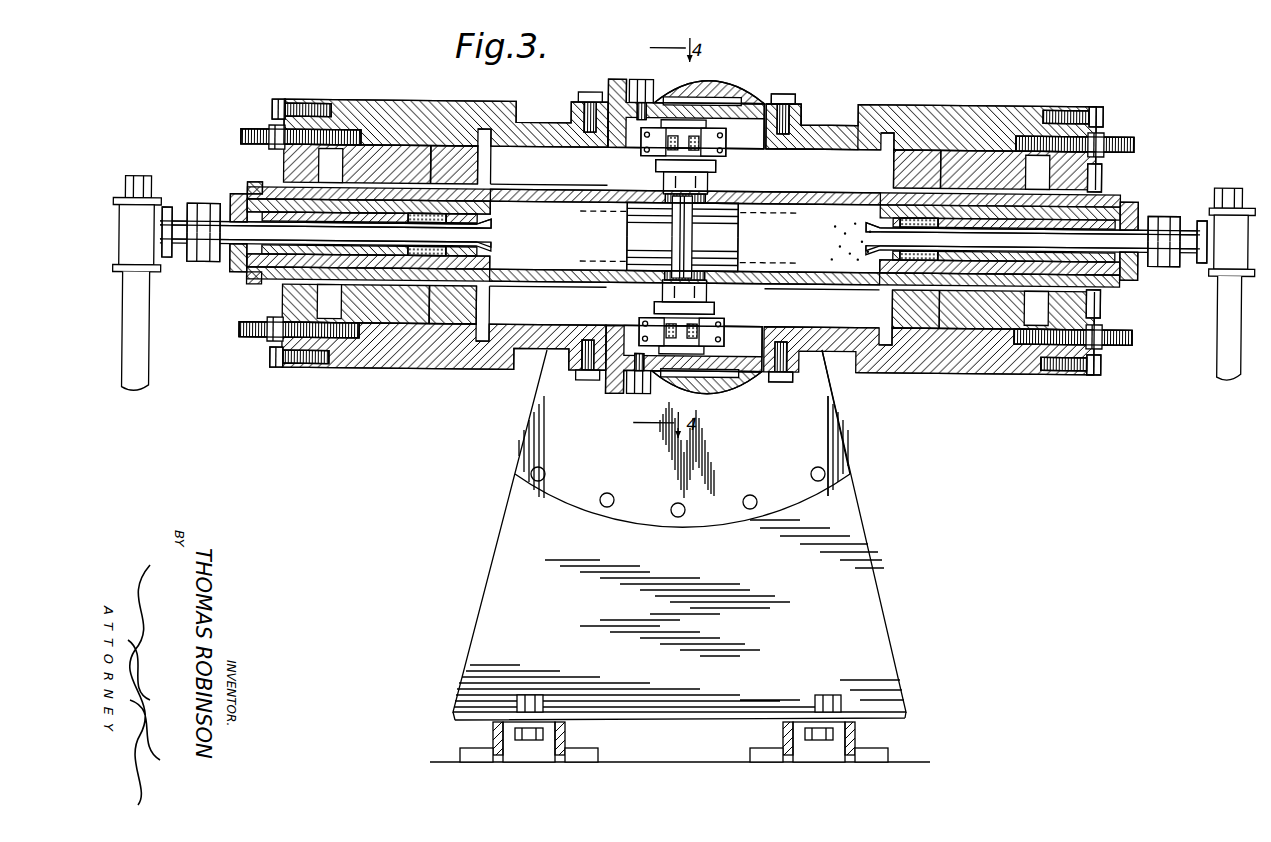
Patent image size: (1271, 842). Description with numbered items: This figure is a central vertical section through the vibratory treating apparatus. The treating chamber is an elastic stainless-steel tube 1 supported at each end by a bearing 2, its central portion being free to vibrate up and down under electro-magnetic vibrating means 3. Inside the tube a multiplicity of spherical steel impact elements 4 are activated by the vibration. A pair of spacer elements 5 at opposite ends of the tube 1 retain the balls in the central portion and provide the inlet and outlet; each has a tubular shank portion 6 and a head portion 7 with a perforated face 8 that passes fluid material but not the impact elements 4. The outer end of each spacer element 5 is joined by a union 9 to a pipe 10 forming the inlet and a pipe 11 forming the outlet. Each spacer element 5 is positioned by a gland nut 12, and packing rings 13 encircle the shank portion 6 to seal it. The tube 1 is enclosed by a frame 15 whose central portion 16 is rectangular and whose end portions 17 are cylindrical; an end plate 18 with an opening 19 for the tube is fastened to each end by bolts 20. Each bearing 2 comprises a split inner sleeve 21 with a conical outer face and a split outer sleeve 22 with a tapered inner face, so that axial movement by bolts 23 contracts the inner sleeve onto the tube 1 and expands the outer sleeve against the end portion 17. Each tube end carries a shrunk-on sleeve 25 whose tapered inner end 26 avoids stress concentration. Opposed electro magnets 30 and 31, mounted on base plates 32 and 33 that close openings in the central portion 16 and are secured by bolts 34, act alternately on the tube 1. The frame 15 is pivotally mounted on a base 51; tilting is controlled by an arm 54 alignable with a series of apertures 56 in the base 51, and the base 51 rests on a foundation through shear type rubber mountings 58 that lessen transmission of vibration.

The tube 1 is at (536, 271).
The bearing 2 is at (482, 176).
The electro-magnetic vibrating means 3 is at (707, 183).
The impact elements 4 is at (822, 258).
The spacer elements 5 is at (174, 262).
The tubular shank portion 6 is at (258, 190).
The head portion 7 is at (493, 226).
The perforated face 8 is at (482, 232).
The union 9 is at (200, 266).
The pipe 10 is at (1198, 250).
The pipe 11 is at (180, 226).
The gland nut 12 is at (237, 200).
The packing rings 13 is at (428, 372).
The frame 15 is at (822, 118).
The central portion 16 is at (540, 122).
The end portions 17 is at (410, 104).
The end plate 18 is at (318, 105).
The opening 19 is at (1090, 182).
The bolts 20 is at (272, 112).
The inner sleeve 21 is at (367, 300).
The outer sleeve 22 is at (400, 340).
The bolts 23 is at (242, 138).
The sleeve 25 is at (258, 286).
The tapered inner end 26 is at (492, 274).
The electro magnet 30 is at (640, 152).
The electro magnet 31 is at (641, 320).
The base plate 32 is at (722, 90).
The base plate 33 is at (725, 388).
The bolts 34 is at (784, 93).
The base 51 is at (500, 534).
The arm 54 is at (835, 442).
The apertures 56 is at (678, 502).
The rubber mountings 58 is at (567, 740).